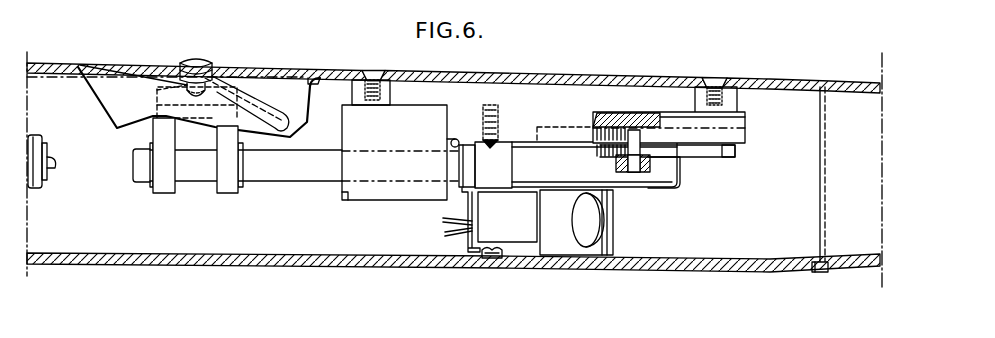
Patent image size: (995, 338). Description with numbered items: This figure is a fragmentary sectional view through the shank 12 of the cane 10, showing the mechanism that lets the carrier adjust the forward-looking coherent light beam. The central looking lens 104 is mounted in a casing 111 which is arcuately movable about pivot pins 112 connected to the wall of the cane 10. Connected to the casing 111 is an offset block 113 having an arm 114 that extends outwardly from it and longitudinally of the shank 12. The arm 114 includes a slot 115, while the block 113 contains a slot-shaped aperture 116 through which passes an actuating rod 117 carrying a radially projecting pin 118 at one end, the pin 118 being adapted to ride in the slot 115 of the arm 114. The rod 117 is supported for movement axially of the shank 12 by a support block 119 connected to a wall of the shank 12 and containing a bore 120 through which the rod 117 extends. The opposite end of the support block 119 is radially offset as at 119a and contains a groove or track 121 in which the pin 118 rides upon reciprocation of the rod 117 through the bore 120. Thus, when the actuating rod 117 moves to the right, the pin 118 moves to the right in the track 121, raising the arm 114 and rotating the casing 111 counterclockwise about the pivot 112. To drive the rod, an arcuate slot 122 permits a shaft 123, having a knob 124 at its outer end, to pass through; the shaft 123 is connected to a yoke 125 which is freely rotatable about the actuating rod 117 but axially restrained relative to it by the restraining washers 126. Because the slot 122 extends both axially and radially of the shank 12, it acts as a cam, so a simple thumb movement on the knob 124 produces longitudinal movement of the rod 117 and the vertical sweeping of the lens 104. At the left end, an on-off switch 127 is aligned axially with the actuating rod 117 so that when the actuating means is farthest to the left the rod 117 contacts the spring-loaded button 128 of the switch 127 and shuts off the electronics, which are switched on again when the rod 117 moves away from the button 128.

The cane 10 is at (522, 68).
The shank 12 is at (410, 267).
The central looking lens 104 is at (588, 224).
The casing 111 is at (612, 250).
The pivot pins 112 is at (500, 140).
The offset block 113 is at (503, 172).
The arm 114 is at (713, 158).
The slot 115 is at (658, 156).
The slot-shaped aperture 116 is at (466, 161).
The actuating rod 117 is at (300, 177).
The radially projecting pin 118 is at (665, 112).
The support block 119 is at (377, 191).
The radially offset end 119a is at (457, 139).
The bore 120 is at (342, 193).
The groove or track 121 is at (607, 113).
The arcuate slot 122 is at (247, 97).
The shaft 123 is at (157, 90).
The knob 124 is at (197, 58).
The yoke 125 is at (163, 194).
The restraining washers 126 is at (152, 146).
The on-off switch 127 is at (33, 190).
The spring-loaded button 128 is at (53, 159).